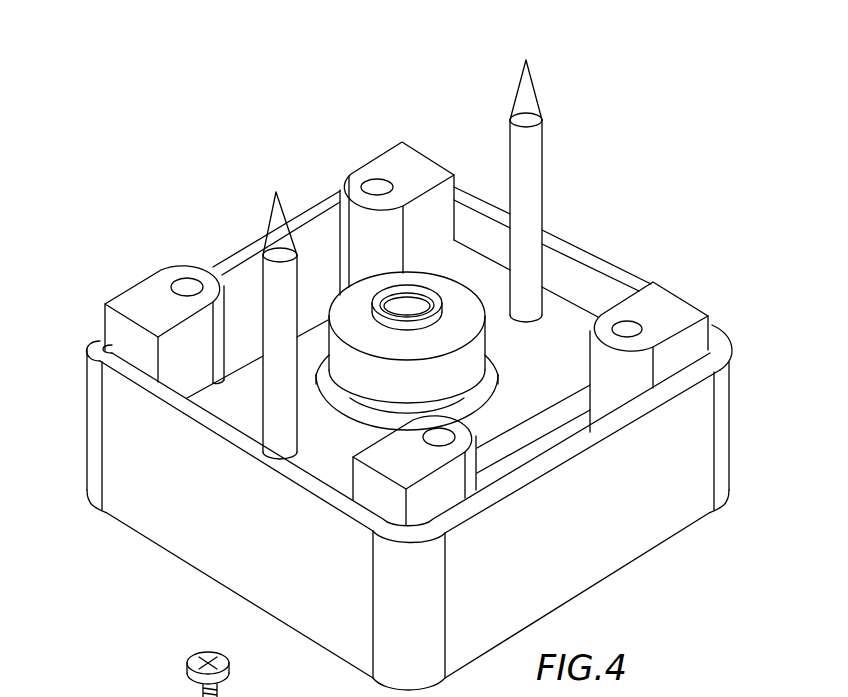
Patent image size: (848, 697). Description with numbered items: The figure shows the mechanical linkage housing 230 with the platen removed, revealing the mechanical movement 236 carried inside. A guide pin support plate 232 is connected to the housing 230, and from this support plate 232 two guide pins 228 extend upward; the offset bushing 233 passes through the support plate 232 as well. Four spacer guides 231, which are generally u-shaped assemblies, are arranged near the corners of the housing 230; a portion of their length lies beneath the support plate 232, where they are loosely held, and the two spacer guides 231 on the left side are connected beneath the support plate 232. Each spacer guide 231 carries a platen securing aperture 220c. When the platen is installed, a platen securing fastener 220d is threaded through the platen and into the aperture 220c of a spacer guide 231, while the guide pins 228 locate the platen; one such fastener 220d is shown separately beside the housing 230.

The mechanical linkage housing 230 is at (197, 478).
The spacer guides 231 is at (140, 288).
The platen securing aperture 220c is at (181, 281).
The guide pins 228 is at (270, 222).
The offset bushing 233 is at (438, 290).
The guide pin support plate 232 is at (225, 415).
The mechanical movement 236 is at (607, 227).
The platen securing fastener 220d is at (185, 673).